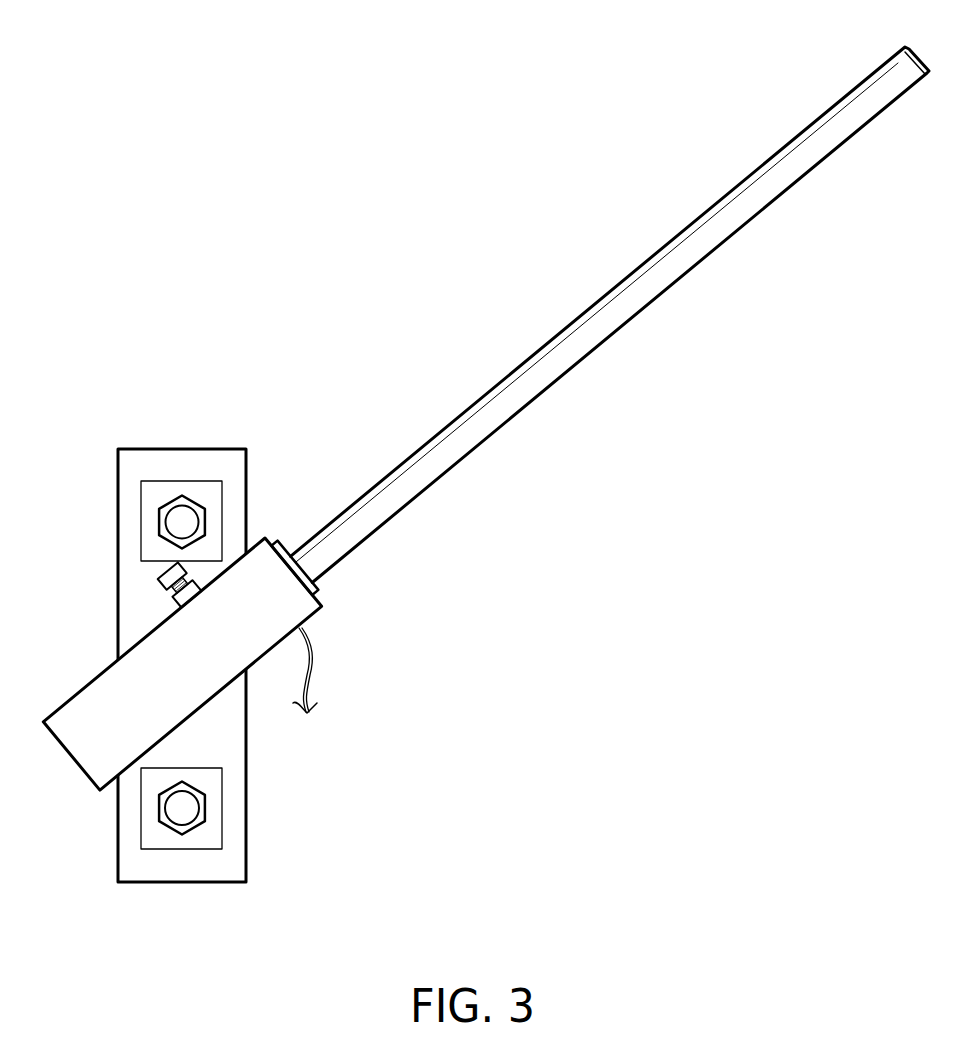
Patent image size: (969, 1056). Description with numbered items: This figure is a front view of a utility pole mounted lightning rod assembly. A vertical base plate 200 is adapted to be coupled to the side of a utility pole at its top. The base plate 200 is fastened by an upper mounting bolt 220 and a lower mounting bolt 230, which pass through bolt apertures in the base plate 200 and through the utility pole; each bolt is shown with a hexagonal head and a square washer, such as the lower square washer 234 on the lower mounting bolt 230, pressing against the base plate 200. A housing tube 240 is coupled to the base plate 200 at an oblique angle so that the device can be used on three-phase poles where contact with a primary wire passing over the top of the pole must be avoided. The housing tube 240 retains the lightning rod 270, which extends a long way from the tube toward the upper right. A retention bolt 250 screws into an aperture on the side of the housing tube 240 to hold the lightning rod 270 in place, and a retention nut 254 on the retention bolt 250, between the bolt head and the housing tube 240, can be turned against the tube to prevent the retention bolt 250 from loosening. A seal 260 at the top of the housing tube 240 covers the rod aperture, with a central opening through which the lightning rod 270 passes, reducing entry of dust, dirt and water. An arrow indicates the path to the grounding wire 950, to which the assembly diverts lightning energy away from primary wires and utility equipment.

The base plate 200 is at (147, 467).
The upper mounting bolt 220 is at (183, 517).
The lower mounting bolt 230 is at (187, 810).
The lower square washer 234 is at (150, 502).
The housing tube 240 is at (76, 744).
The retention bolt 250 is at (162, 573).
The retention nut 254 is at (167, 600).
The seal 260 is at (317, 592).
The lightning rod 270 is at (780, 163).
The grounding wire 950 is at (312, 667).